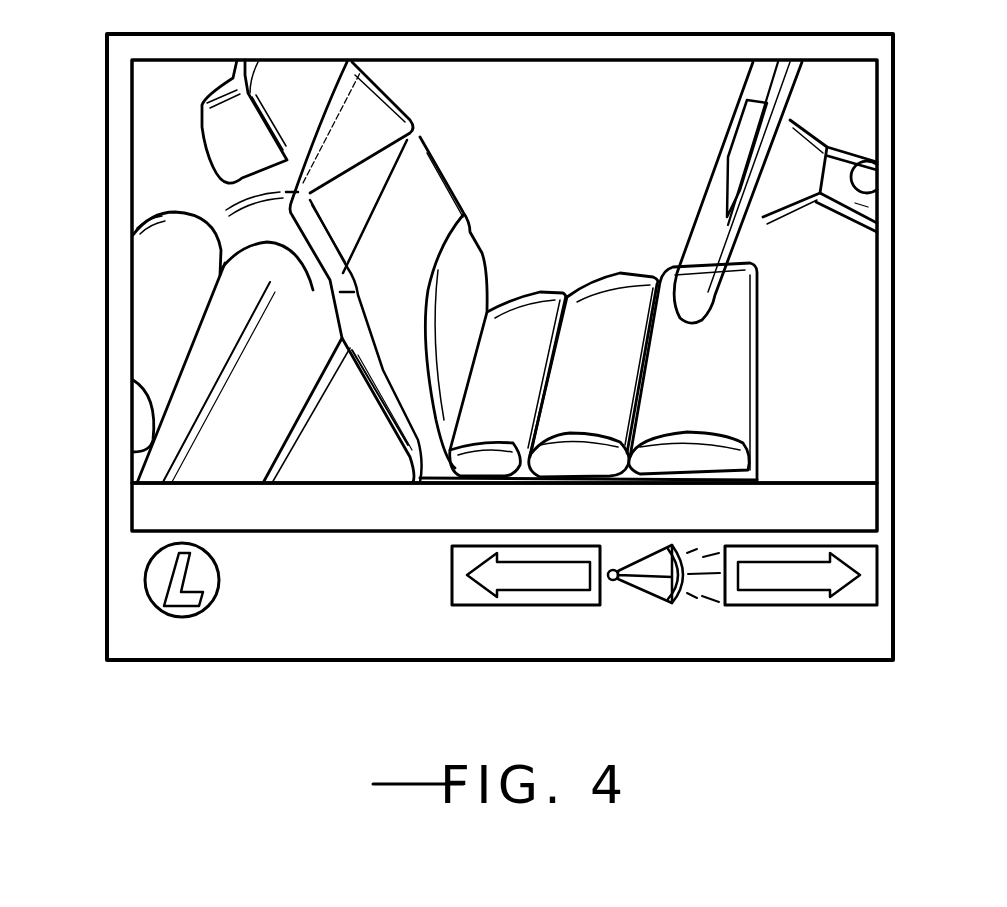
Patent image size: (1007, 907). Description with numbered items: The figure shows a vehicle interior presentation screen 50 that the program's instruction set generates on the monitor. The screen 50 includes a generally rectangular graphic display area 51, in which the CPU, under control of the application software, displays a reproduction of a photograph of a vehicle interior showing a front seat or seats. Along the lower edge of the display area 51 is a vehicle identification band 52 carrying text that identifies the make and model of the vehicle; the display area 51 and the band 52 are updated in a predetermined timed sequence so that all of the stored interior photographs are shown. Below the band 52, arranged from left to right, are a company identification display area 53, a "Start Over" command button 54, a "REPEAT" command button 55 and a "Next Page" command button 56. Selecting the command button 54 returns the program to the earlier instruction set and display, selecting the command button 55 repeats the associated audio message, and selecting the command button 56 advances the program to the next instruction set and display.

The vehicle interior presentation screen 50 is at (100, 272).
The graphic display area 51 is at (132, 152).
The vehicle identification band 52 is at (145, 517).
The company identification display area 53 is at (170, 630).
The "Start Over" command button 54 is at (477, 606).
The "REPEAT" command button 55 is at (601, 632).
The "Next Page" command button 56 is at (790, 606).